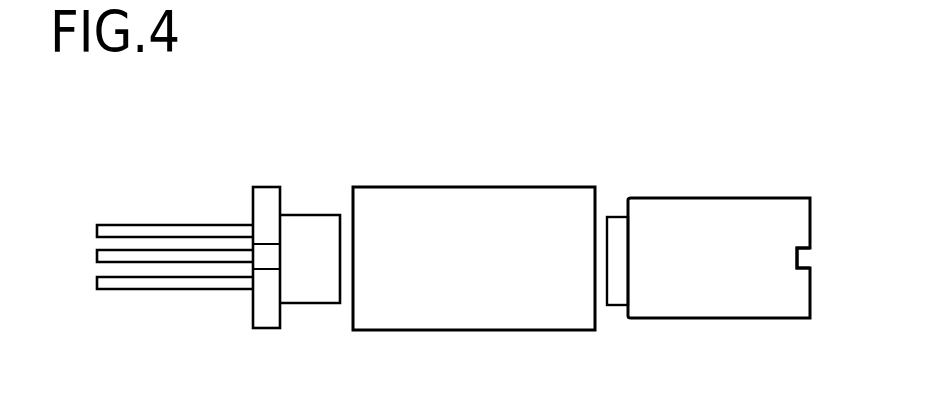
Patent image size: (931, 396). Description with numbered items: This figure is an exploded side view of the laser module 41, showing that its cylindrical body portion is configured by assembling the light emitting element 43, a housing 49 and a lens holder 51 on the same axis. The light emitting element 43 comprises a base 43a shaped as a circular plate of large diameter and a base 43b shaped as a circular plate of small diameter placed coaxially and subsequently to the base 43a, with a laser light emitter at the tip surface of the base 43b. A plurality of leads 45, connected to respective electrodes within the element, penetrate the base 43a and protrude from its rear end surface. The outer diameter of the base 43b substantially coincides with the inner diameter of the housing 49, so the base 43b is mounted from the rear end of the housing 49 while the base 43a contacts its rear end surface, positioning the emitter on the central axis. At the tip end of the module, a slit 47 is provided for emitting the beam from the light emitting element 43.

The laser module 41 is at (608, 98).
The light emitting element 43 is at (319, 181).
The base 43a is at (265, 329).
The base 43b is at (313, 304).
The leads 45 is at (95, 283).
The slit 47 is at (801, 256).
The housing 49 is at (487, 181).
The lens holder 51 is at (618, 181).